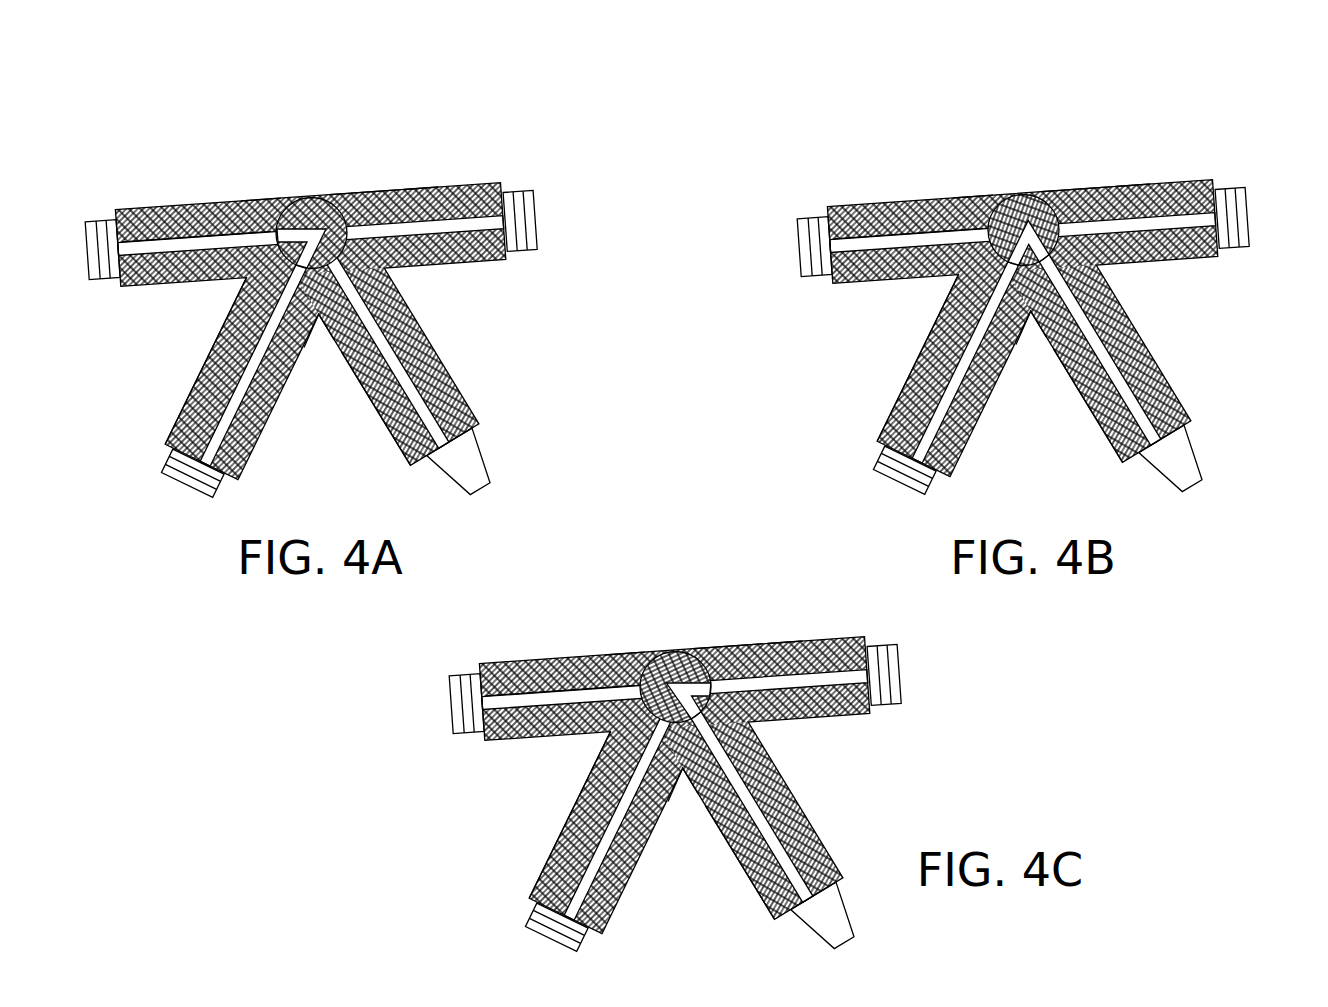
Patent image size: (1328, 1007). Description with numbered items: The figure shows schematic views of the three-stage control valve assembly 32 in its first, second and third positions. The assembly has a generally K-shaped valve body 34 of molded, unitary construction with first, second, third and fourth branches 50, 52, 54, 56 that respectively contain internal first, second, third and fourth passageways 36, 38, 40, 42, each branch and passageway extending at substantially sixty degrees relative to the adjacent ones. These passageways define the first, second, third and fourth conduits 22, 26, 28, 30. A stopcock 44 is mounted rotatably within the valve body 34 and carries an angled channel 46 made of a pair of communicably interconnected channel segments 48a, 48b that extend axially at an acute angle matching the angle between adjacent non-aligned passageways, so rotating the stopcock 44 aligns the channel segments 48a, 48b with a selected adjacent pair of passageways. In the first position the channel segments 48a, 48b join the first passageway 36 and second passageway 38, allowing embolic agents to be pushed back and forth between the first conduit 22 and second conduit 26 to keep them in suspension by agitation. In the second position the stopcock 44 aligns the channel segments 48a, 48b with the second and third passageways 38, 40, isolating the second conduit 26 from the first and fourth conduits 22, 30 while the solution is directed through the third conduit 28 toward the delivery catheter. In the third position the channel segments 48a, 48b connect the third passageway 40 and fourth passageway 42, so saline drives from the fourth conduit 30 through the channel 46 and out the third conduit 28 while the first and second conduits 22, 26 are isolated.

In FIG. 4A, the first conduit 22 is at (295, 290).
In FIG. 4B, the first conduit 22 is at (1007, 286).
In FIG. 4C, the first conduit 22 is at (659, 743).
In FIG. 4A, the second conduit 26 is at (256, 364).
In FIG. 4B, the second conduit 26 is at (968, 360).
In FIG. 4C, the second conduit 26 is at (620, 818).
In FIG. 4A, the third conduit 28 is at (424, 352).
In FIG. 4B, the third conduit 28 is at (1135, 349).
In FIG. 4C, the third conduit 28 is at (784, 806).
In FIG. 4A, the fourth conduit 30 is at (494, 164).
In FIG. 4B, the fourth conduit 30 is at (1206, 161).
In FIG. 4C, the fourth conduit 30 is at (858, 617).
In FIG. 4A, the control valve assembly 32 is at (311, 166).
In FIG. 4B, the control valve assembly 32 is at (1023, 162).
In FIG. 4C, the control valve assembly 32 is at (675, 620).
In FIG. 4A, the valve body 34 is at (374, 140).
In FIG. 4B, the valve body 34 is at (1087, 136).
In FIG. 4C, the valve body 34 is at (736, 595).
In FIG. 4A, the first passageway 36 is at (197, 187).
In FIG. 4B, the first passageway 36 is at (909, 183).
In FIG. 4C, the first passageway 36 is at (561, 640).
In FIG. 4A, the second passageway 38 is at (192, 304).
In FIG. 4B, the second passageway 38 is at (904, 301).
In FIG. 4C, the second passageway 38 is at (550, 766).
In FIG. 4A, the third passageway 40 is at (314, 365).
In FIG. 4B, the third passageway 40 is at (1027, 359).
In FIG. 4C, the third passageway 40 is at (680, 825).
In FIG. 4A, the fourth passageway 42 is at (389, 159).
In FIG. 4B, the fourth passageway 42 is at (1100, 155).
In FIG. 4C, the fourth passageway 42 is at (752, 612).
In FIG. 4A, the stopcock 44 is at (249, 148).
In FIG. 4B, the stopcock 44 is at (960, 146).
In FIG. 4C, the stopcock 44 is at (612, 602).
In FIG. 4A, the angled channel 46 is at (355, 123).
In FIG. 4B, the angled channel 46 is at (1071, 122).
In FIG. 4C, the angled channel 46 is at (669, 578).
In FIG. 4A, the channel segment 48a is at (260, 254).
In FIG. 4B, the channel segment 48a is at (972, 252).
In FIG. 4C, the channel segment 48a is at (599, 803).
In FIG. 4A, the channel segment 48b is at (395, 338).
In FIG. 4B, the channel segment 48b is at (1116, 335).
In FIG. 4C, the channel segment 48b is at (743, 698).
In FIG. 4A, the first branch 50 is at (311, 169).
In FIG. 4B, the first branch 50 is at (1023, 166).
In FIG. 4C, the first branch 50 is at (675, 623).
In FIG. 4A, the second branch 52 is at (148, 387).
In FIG. 4B, the second branch 52 is at (861, 384).
In FIG. 4C, the second branch 52 is at (512, 841).
In FIG. 4A, the third branch 54 is at (360, 417).
In FIG. 4B, the third branch 54 is at (1073, 412).
In FIG. 4C, the third branch 54 is at (740, 874).
In FIG. 4A, the fourth branch 56 is at (426, 117).
In FIG. 4B, the fourth branch 56 is at (1137, 114).
In FIG. 4C, the fourth branch 56 is at (789, 570).